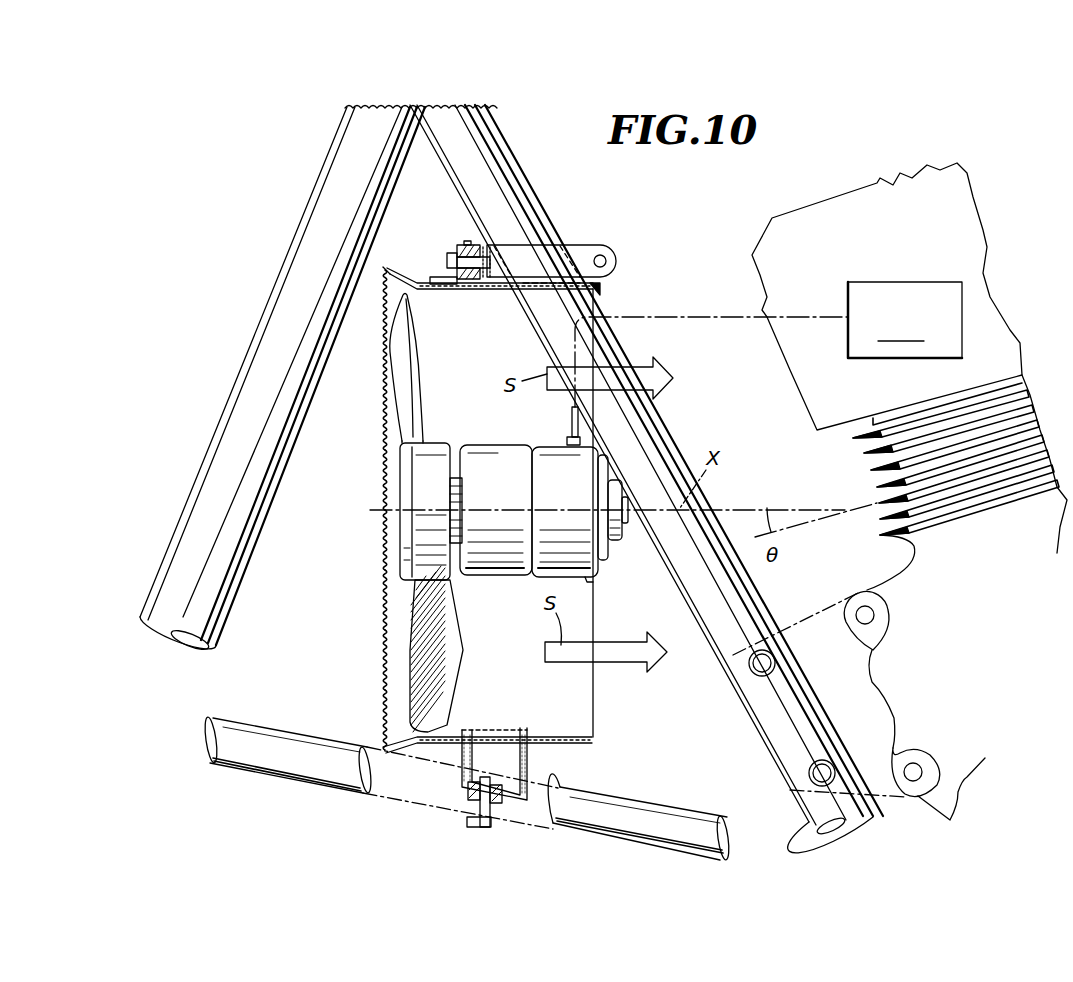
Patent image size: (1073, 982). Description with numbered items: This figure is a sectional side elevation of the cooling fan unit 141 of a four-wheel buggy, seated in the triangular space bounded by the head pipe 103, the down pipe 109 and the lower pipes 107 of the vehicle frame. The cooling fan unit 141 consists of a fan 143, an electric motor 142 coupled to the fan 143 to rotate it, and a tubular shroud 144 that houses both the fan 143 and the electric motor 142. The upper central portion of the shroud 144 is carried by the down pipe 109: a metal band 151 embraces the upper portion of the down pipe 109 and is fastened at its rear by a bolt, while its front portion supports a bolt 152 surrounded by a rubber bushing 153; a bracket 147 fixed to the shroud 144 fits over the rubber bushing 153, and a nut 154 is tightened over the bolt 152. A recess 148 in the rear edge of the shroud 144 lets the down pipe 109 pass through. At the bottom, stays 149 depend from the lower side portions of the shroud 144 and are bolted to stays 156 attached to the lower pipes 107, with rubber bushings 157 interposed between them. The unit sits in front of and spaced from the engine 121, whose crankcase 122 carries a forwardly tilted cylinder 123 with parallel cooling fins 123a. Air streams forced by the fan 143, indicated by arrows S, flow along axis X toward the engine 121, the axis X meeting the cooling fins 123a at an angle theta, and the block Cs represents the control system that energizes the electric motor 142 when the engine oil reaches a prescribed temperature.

The head pipe 103 is at (247, 352).
The lower pipes 107 is at (640, 808).
The down pipe 109 is at (670, 436).
The engine 121 is at (800, 436).
The crankcase 122 is at (940, 797).
The cylinder 123 is at (987, 497).
The cooling fins 123a is at (875, 488).
The cooling fan unit 141 is at (373, 462).
The electric motor 142 is at (596, 556).
The fan 143 is at (400, 377).
The tubular shroud 144 is at (594, 692).
The bracket 147 is at (440, 280).
The recess 148 is at (556, 287).
The stays 149 is at (528, 760).
The metal band 151 is at (565, 258).
The bolt 152 is at (495, 258).
The rubber bushing 153 is at (462, 244).
The nut 154 is at (456, 286).
The stays 156 is at (460, 806).
The rubber bushings 157 is at (498, 815).